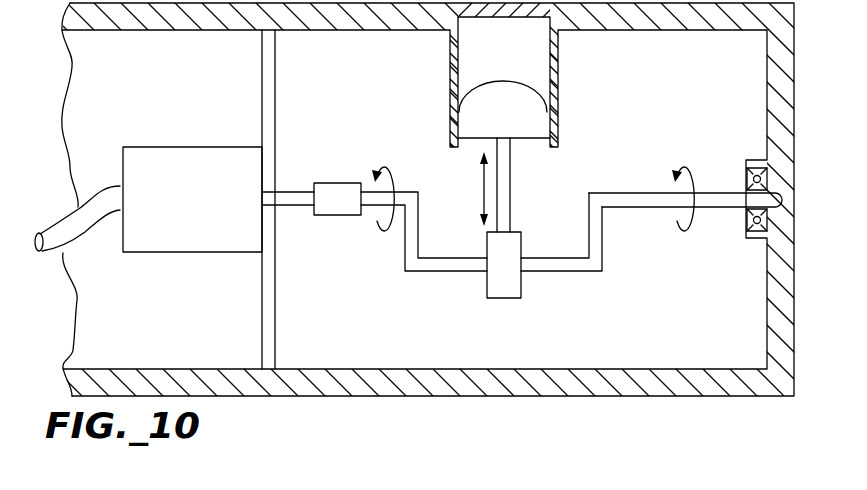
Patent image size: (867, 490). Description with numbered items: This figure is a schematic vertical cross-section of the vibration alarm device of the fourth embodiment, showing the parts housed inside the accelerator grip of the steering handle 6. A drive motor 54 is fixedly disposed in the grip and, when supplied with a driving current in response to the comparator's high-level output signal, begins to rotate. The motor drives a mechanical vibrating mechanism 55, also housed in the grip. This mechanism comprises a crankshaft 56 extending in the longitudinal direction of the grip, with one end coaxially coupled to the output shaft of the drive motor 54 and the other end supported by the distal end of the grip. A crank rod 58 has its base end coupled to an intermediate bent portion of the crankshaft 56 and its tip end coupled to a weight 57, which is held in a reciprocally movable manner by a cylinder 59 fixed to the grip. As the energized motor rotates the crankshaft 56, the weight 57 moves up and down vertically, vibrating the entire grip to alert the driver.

The steering handle 6 is at (607, 23).
The drive motor 54 is at (227, 240).
The mechanical vibrating mechanism 55 is at (388, 143).
The crankshaft 56 is at (628, 207).
The weight 57 is at (540, 125).
The crank rod 58 is at (512, 176).
The cylinder 59 is at (466, 70).